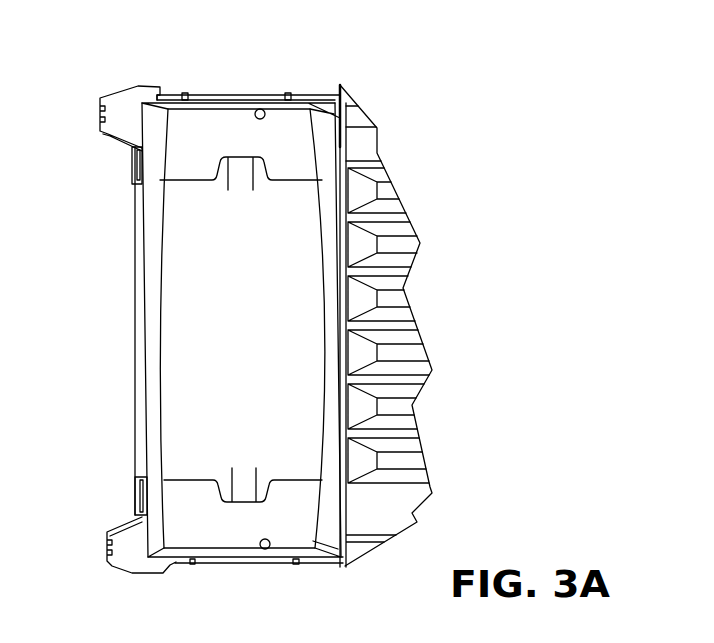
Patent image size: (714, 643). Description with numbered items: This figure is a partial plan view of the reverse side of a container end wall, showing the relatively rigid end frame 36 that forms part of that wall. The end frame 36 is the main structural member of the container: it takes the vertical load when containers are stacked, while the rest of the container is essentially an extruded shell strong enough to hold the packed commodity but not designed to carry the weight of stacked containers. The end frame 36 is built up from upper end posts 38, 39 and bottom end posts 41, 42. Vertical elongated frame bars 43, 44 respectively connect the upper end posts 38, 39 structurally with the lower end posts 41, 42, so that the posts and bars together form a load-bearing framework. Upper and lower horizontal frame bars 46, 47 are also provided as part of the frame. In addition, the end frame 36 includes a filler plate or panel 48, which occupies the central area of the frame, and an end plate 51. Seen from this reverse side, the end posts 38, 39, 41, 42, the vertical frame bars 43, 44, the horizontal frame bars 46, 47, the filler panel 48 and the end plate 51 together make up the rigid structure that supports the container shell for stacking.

The end frame 36 is at (120, 327).
The upper end post 38 is at (127, 540).
The upper end post 39 is at (130, 100).
The bottom end post 41 is at (347, 567).
The bottom end post 42 is at (378, 131).
The vertical elongated frame bar 43 is at (242, 556).
The vertical elongated frame bar 44 is at (252, 100).
The upper horizontal frame bar 46 is at (157, 404).
The lower horizontal frame bar 47 is at (328, 398).
The filler plate 48 is at (200, 336).
The end plate 51 is at (180, 531).